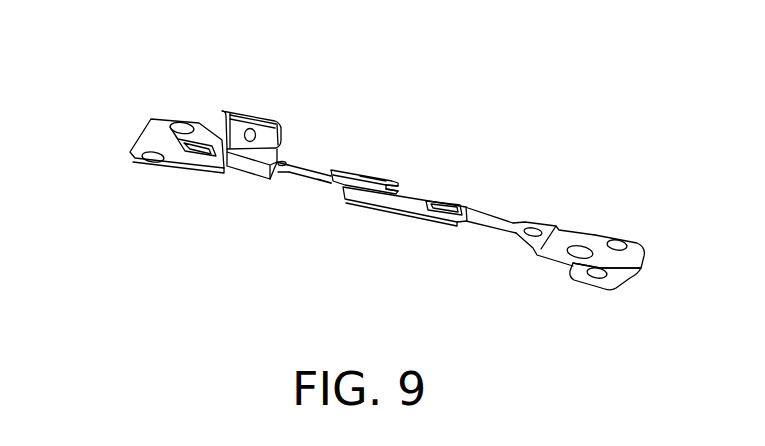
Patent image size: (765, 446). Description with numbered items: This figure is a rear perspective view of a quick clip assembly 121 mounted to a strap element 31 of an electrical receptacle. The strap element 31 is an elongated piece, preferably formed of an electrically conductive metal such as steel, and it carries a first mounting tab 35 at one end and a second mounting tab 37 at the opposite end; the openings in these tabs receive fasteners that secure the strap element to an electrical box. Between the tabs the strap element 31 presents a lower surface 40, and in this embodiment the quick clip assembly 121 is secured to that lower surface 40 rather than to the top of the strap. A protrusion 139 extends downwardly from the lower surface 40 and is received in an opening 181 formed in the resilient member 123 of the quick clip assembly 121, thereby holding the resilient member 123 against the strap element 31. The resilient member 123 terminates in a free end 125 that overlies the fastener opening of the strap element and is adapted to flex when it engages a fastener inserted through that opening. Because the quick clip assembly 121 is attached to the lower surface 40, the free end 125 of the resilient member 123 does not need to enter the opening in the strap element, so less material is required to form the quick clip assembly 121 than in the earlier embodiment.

The strap element 31 is at (429, 227).
The first mounting tab 35 is at (153, 134).
The second mounting tab 37 is at (637, 268).
The lower surface 40 is at (458, 197).
The quick clip assembly 121 is at (374, 166).
The resilient member 123 is at (330, 168).
The free end 125 is at (395, 170).
The protrusion 139 is at (351, 168).
The opening 181 is at (318, 181).